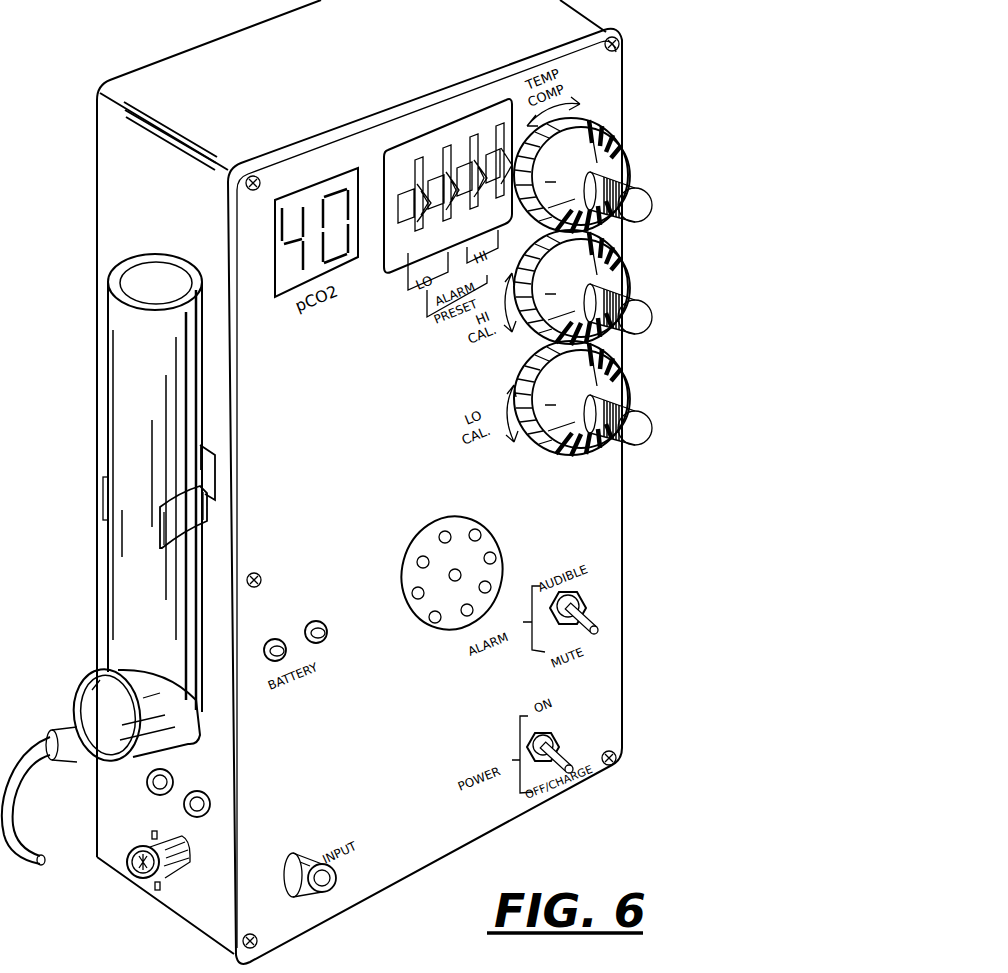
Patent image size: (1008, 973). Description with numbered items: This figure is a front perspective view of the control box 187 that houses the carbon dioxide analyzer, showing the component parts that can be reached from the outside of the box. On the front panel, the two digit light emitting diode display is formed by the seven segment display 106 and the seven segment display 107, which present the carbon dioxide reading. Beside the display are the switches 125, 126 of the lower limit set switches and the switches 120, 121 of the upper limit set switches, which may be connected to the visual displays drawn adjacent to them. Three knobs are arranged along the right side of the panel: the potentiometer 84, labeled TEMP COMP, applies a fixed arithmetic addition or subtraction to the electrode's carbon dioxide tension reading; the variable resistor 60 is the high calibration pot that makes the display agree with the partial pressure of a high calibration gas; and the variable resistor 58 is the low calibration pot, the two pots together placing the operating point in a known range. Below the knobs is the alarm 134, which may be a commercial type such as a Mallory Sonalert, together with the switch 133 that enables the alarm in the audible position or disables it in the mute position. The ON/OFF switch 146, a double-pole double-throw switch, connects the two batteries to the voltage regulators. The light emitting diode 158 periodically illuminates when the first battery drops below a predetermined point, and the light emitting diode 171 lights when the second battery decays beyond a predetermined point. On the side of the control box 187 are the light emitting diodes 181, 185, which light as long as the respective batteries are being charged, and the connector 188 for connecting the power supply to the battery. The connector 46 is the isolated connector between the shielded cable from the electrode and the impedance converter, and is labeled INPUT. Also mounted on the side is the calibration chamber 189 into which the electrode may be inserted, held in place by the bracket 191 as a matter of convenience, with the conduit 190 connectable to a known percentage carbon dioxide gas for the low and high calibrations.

The connector 46 is at (297, 886).
The variable resistor 58 is at (652, 428).
The variable resistor 60 is at (652, 317).
The potentiometer 84 is at (652, 205).
The seven segment display 106 is at (286, 219).
The seven segment display 107 is at (331, 193).
The switch 120 is at (473, 147).
The switch 121 is at (497, 133).
The switch 125 is at (417, 177).
The switch 126 is at (450, 160).
The switch 133 is at (596, 622).
The alarm 134 is at (428, 548).
The ON/OFF switch 146 is at (562, 752).
The light emitting diode 158 is at (270, 640).
The light emitting diode 171 is at (318, 621).
The light emitting diode 181 is at (147, 782).
The light emitting diode 185 is at (197, 791).
The control box 187 is at (413, 898).
The connector 188 is at (140, 846).
The calibration chamber 189 is at (127, 385).
The conduit 190 is at (14, 805).
The bracket 191 is at (206, 518).